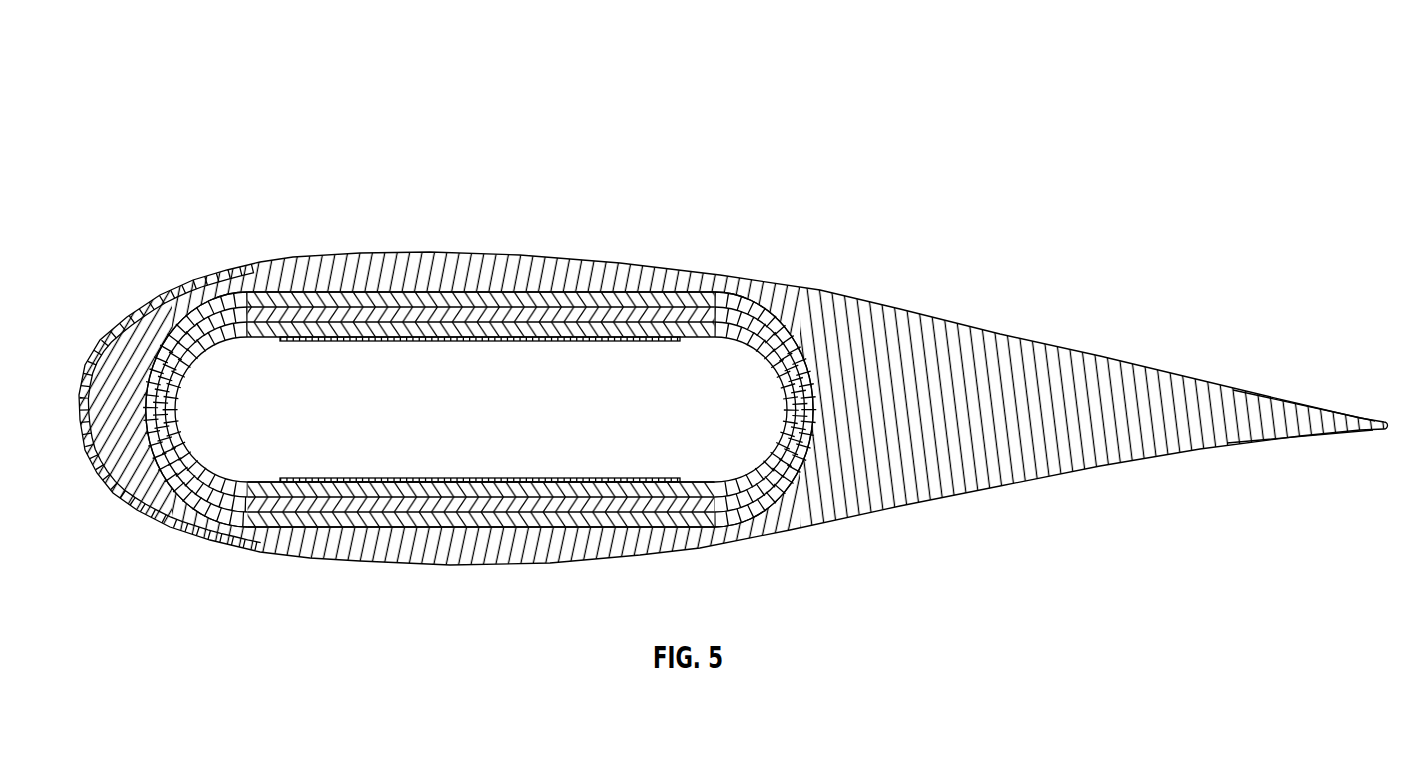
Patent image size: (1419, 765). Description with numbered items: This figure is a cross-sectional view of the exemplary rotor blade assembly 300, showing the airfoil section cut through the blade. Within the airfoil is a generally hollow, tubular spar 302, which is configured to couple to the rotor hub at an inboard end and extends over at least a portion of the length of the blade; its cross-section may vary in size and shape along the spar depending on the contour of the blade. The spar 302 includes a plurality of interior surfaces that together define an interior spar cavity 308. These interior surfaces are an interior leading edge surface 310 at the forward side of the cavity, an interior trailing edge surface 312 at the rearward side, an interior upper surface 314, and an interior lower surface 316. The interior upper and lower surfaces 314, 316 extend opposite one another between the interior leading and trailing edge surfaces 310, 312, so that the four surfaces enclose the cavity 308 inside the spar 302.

The rotor blade assembly 300 is at (178, 158).
The spar 302 is at (716, 303).
The interior spar cavity 308 is at (548, 375).
The interior leading edge surface 310 is at (165, 420).
The interior trailing edge surface 312 is at (786, 407).
The interior upper surface 314 is at (324, 343).
The interior lower surface 316 is at (577, 477).